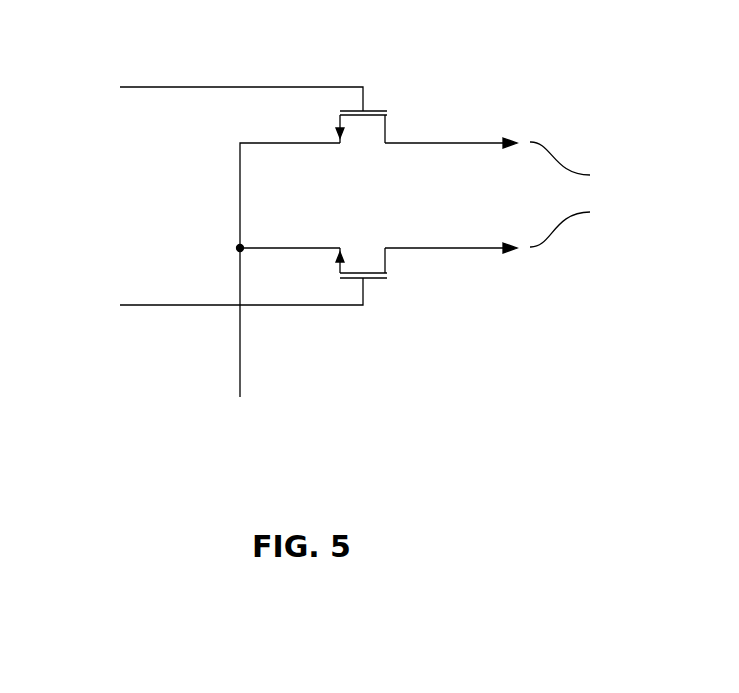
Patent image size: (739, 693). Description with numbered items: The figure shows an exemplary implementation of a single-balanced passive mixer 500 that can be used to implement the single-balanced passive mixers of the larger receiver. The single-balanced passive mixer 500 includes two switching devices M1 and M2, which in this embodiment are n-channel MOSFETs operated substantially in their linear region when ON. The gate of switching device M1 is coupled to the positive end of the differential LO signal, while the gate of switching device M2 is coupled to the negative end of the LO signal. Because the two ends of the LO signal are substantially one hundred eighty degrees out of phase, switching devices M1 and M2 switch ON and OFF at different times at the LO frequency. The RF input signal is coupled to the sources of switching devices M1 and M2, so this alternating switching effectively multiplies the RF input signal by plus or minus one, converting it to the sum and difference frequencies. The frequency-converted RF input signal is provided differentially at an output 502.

The single-balanced passive mixer 500 is at (333, 267).
The output 502 is at (580, 194).
The switching device M1 is at (361, 140).
The switching device M2 is at (361, 250).